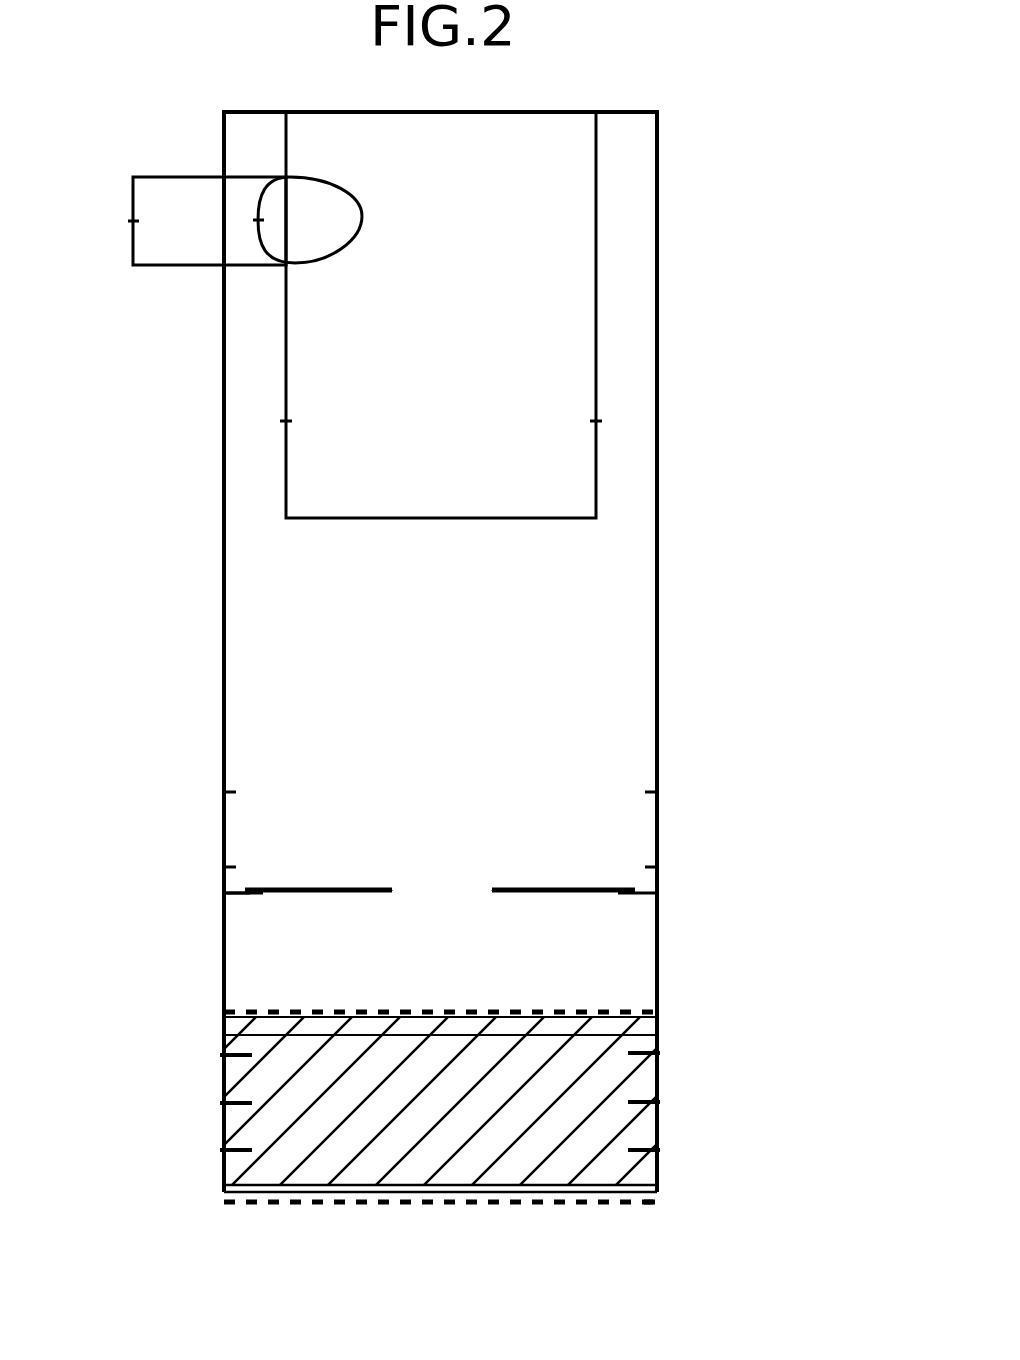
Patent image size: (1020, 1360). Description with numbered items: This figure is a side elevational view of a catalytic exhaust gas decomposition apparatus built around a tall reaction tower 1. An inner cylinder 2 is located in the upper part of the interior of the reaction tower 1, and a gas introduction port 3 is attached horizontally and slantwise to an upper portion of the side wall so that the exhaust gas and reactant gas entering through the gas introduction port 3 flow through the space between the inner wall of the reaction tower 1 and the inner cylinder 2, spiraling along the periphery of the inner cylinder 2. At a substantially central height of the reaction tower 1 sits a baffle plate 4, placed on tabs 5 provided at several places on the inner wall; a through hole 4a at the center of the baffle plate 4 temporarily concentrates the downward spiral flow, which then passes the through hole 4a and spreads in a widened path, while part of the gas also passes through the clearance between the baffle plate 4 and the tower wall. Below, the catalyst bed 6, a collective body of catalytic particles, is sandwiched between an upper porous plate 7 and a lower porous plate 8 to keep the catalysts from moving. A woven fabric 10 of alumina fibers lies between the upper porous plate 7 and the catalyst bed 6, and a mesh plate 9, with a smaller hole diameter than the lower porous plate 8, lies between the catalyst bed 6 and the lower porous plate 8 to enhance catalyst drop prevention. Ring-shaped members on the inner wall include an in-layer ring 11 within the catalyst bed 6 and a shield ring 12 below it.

The reaction tower 1 is at (657, 433).
The inner cylinder 2 is at (596, 214).
The gas introduction port 3 is at (152, 177).
The baffle plate 4 is at (328, 888).
The through hole 4a is at (448, 890).
The tabs 5 is at (238, 893).
The catalyst bed 6 is at (640, 1078).
The upper porous plate 7 is at (228, 1012).
The lower porous plate 8 is at (297, 1205).
The mesh plate 9 is at (658, 1186).
The woven fabric 10 is at (225, 1028).
The in-layer ring 11 is at (663, 1150).
The shield ring 12 is at (660, 1201).